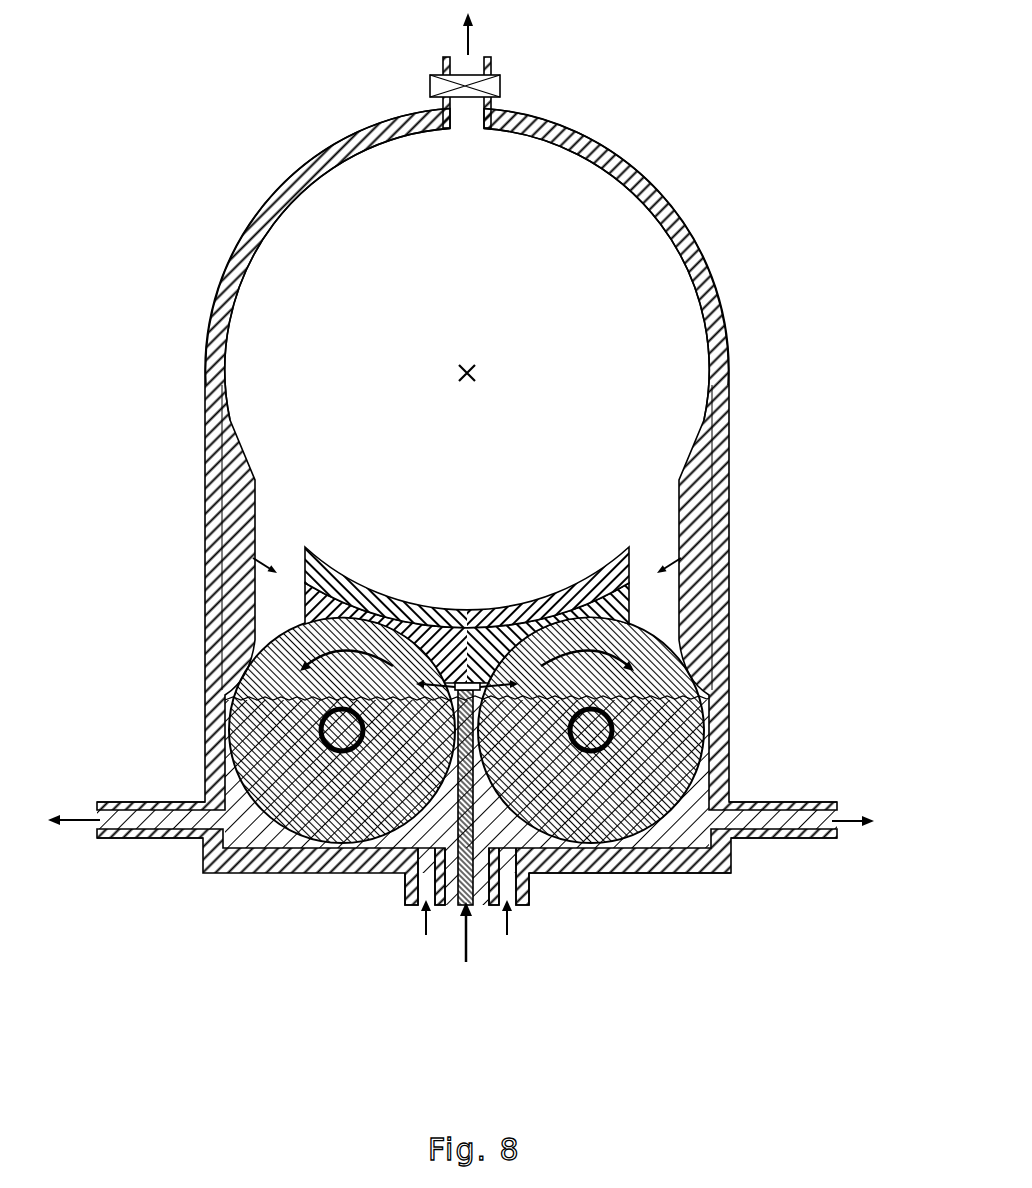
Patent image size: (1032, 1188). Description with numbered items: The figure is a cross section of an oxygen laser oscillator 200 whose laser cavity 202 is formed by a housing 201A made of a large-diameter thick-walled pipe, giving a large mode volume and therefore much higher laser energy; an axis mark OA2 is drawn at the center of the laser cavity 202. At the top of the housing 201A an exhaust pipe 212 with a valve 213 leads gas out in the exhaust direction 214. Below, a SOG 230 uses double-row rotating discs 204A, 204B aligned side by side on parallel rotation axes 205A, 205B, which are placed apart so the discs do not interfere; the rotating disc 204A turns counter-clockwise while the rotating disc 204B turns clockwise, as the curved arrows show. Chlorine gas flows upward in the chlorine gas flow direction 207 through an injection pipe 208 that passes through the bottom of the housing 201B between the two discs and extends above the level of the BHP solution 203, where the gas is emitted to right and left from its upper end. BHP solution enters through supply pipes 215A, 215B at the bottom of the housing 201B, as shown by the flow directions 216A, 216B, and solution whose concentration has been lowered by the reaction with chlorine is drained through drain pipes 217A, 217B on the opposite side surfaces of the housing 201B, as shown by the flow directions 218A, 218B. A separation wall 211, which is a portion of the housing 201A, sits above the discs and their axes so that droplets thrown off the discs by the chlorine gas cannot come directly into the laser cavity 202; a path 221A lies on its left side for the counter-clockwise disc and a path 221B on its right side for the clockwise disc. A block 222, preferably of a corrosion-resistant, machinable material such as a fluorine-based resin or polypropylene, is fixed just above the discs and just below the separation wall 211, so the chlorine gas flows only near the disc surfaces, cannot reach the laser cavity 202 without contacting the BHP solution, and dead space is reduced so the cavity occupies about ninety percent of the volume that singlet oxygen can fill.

The oxygen laser oscillator 200 is at (251, 84).
The housing 201A is at (268, 200).
The housing 201B is at (205, 499).
The laser cavity 202 is at (605, 278).
The central axis OA2 is at (478, 365).
The BHP solution 203 is at (245, 873).
The rotating disc 204A is at (238, 688).
The rotating disc 204B is at (695, 682).
The rotation axis 205A is at (330, 835).
The rotation axis 205B is at (605, 838).
The chlorine gas flow direction 207 is at (466, 844).
The injection pipe 208 is at (472, 907).
The separation wall 211 is at (603, 562).
The exhaust pipe 212 is at (490, 58).
The valve 213 is at (500, 84).
The exhaust direction 214 is at (472, 35).
The supply pipe 215A is at (404, 893).
The supply pipe 215B is at (528, 893).
The BHP solution flow direction 216A is at (428, 934).
The BHP solution flow direction 216B is at (518, 934).
The drain pipe 217A is at (160, 840).
The drain pipe 217B is at (777, 842).
The BHP solution flow direction 218A is at (75, 824).
The BHP solution flow direction 218B is at (855, 833).
The path 221A is at (205, 560).
The path 221B is at (732, 556).
The block 222 is at (632, 598).
The SOG 230 is at (685, 888).